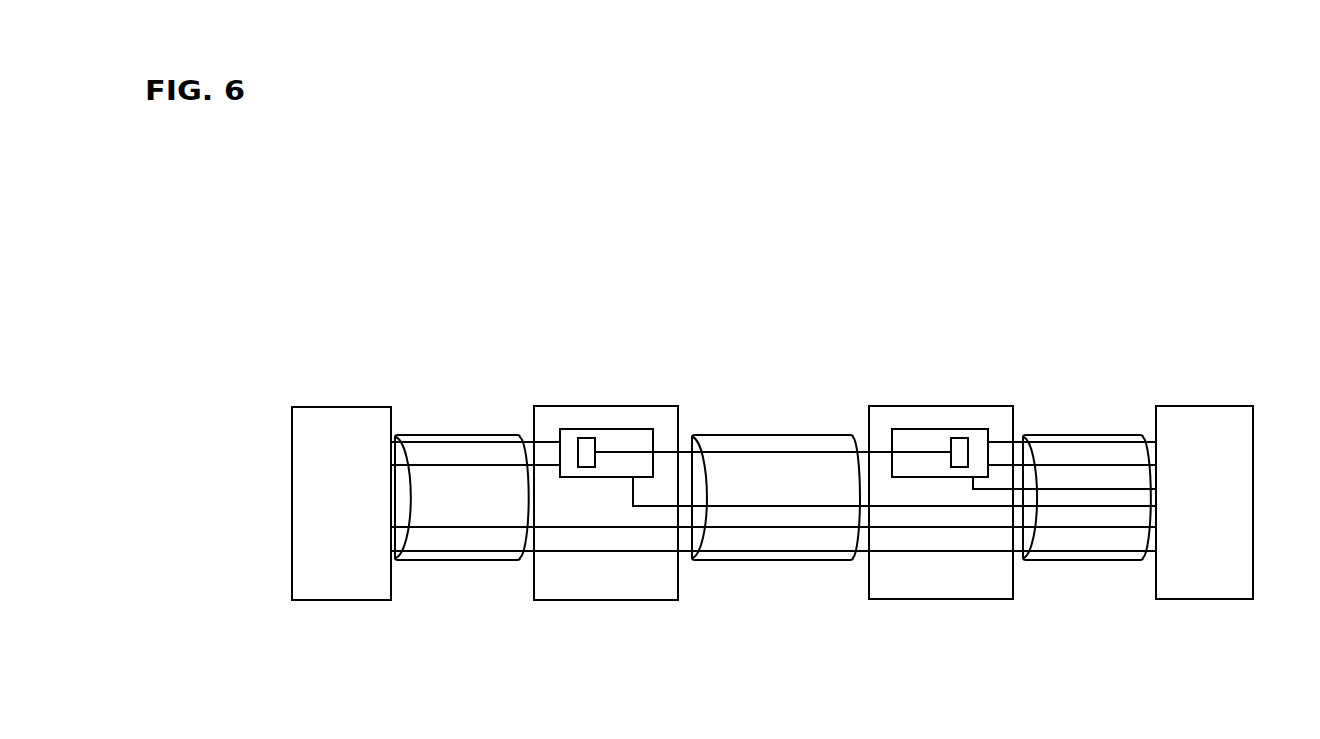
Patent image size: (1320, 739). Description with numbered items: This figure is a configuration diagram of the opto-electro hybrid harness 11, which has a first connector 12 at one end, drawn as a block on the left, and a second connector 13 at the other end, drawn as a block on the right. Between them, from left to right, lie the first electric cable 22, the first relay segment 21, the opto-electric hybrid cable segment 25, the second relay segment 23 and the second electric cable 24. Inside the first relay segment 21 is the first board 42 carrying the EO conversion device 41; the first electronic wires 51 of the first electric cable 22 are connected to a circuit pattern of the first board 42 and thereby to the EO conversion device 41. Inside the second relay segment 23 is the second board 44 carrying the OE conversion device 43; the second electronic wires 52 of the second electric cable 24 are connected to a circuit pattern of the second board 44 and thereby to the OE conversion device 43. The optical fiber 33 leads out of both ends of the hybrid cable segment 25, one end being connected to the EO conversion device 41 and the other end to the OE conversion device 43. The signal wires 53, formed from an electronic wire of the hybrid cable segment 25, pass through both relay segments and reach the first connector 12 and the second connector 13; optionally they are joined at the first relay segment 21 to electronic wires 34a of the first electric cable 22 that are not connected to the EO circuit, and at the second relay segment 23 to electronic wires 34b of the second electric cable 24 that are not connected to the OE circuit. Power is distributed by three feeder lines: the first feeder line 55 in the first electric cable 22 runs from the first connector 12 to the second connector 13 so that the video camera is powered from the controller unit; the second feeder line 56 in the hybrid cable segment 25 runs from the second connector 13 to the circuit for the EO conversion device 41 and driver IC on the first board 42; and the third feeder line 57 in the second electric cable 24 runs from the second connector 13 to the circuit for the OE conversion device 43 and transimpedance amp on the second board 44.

The opto-electro hybrid harness 11 is at (1005, 283).
The first connector 12 is at (342, 407).
The second connector 13 is at (1200, 406).
The first relay segment 21 is at (600, 406).
The first electric cable 22 is at (435, 435).
The second relay segment 23 is at (937, 406).
The second electric cable 24 is at (1097, 435).
The opto-electric hybrid cable segment 25 is at (785, 435).
The optical fiber 33 is at (725, 452).
The electronic wires 34a is at (505, 560).
The electronic wires 34b is at (1052, 552).
The EO conversion device 41 is at (582, 438).
The first board 42 is at (635, 429).
The OE conversion device 43 is at (962, 438).
The second board 44 is at (903, 429).
The first electronic wires 51 is at (483, 465).
The second electronic wires 52 is at (1065, 465).
The signal wires 53 is at (758, 552).
The first feeder line 55 is at (432, 528).
The second feeder line 56 is at (813, 507).
The third feeder line 57 is at (1100, 490).